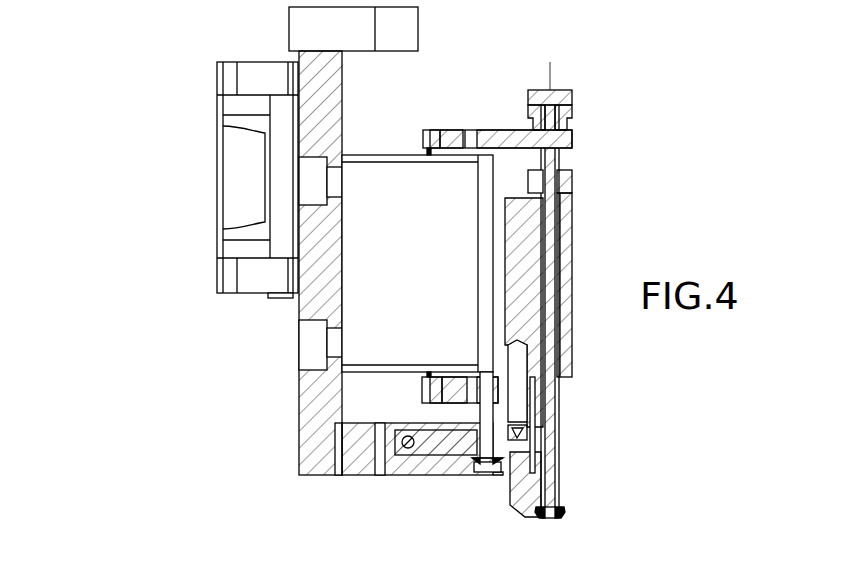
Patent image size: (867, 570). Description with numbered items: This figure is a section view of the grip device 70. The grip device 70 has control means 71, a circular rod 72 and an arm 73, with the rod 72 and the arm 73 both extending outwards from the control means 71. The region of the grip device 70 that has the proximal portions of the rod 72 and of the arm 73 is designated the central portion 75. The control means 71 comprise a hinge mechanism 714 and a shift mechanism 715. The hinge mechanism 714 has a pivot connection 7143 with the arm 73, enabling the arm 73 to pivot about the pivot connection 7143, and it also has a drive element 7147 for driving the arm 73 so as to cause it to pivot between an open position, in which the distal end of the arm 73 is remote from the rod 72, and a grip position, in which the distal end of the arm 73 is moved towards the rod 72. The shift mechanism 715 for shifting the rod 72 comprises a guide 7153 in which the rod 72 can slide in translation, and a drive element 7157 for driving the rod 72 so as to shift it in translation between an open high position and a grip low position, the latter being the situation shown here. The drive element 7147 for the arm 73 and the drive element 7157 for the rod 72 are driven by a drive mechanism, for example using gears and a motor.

The grip device 70 is at (146, 206).
The central portion 75 is at (283, 352).
The control means 71 is at (594, 367).
The circular rod 72 is at (553, 450).
The arm 73 is at (527, 490).
The hinge mechanism 714 is at (443, 462).
The shift mechanism 715 is at (592, 159).
The pivot connection 7143 is at (410, 453).
The drive element 7147 is at (452, 385).
The guide 7153 is at (515, 268).
The drive element 7157 is at (497, 128).